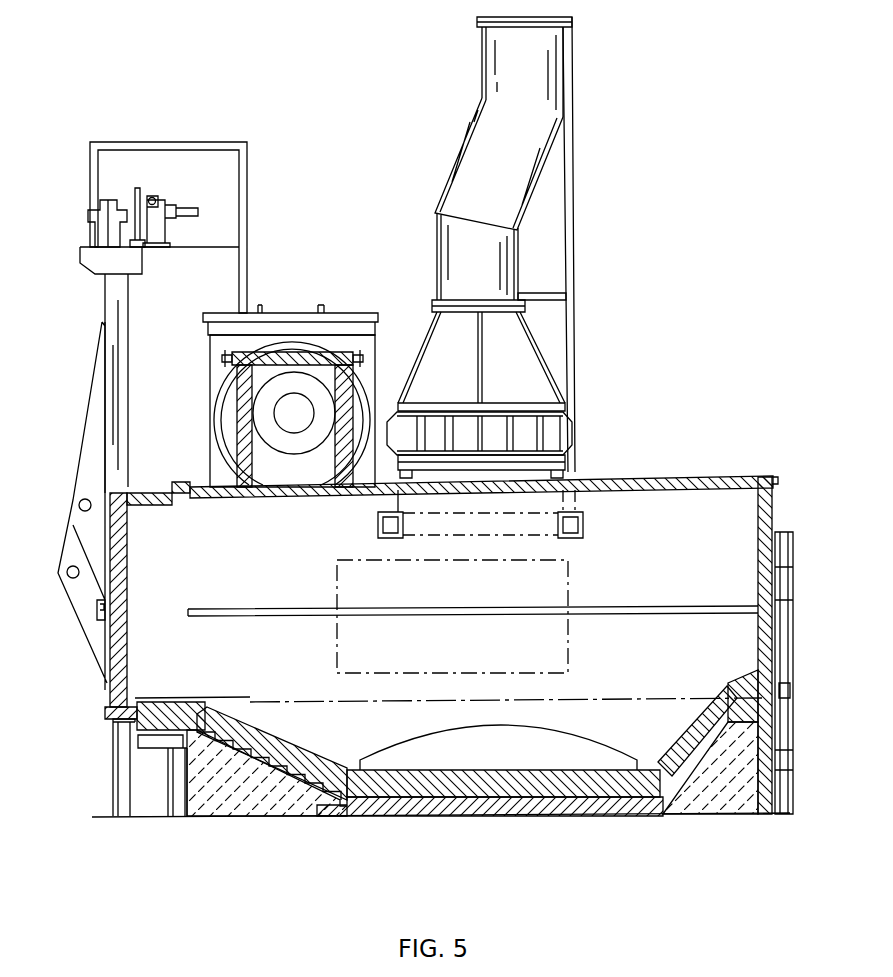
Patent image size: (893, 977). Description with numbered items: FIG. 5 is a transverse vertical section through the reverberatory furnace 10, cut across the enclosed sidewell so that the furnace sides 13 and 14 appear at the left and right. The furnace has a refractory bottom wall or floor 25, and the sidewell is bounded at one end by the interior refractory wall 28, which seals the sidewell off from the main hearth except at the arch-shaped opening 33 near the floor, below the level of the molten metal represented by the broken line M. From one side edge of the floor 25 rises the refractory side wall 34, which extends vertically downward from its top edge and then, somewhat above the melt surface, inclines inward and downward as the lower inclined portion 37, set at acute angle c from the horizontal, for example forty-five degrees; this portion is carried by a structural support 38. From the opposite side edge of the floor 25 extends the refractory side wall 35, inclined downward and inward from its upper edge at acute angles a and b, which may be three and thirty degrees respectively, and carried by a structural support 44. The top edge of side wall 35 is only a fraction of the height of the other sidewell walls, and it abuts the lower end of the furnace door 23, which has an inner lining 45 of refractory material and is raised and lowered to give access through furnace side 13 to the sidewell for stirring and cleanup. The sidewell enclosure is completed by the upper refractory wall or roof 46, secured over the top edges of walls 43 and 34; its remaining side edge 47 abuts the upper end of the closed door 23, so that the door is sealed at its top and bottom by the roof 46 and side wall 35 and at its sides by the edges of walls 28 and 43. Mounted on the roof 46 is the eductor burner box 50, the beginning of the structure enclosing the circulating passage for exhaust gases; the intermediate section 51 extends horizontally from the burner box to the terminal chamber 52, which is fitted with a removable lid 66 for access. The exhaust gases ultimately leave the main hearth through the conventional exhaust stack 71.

The reverberatory furnace 10 is at (661, 422).
The furnace side 13 is at (110, 770).
The furnace side 14 is at (806, 752).
The door 23 is at (105, 521).
The floor 25 is at (563, 788).
The interior refractory wall 28 is at (473, 581).
The arch-shaped opening 33 is at (467, 728).
The refractory side wall 34 is at (758, 527).
The refractory side wall 35 is at (296, 748).
The lower inclined portion 37 is at (697, 713).
The structural support 38 is at (722, 796).
The wall 43 is at (196, 486).
The structural support 44 is at (246, 803).
The inner lining 45 is at (119, 561).
The upper refractory wall 46 is at (694, 483).
The side edge 47 is at (137, 503).
The eductor burner box 50 is at (378, 357).
The intermediate section 51 is at (236, 414).
The terminal chamber 52 is at (210, 349).
The removable lid 66 is at (358, 313).
The exhaust stack 71 is at (455, 241).
The acute angle a is at (195, 718).
The acute angle b is at (280, 705).
The acute angle c is at (668, 706).
The molten metal level M is at (576, 698).